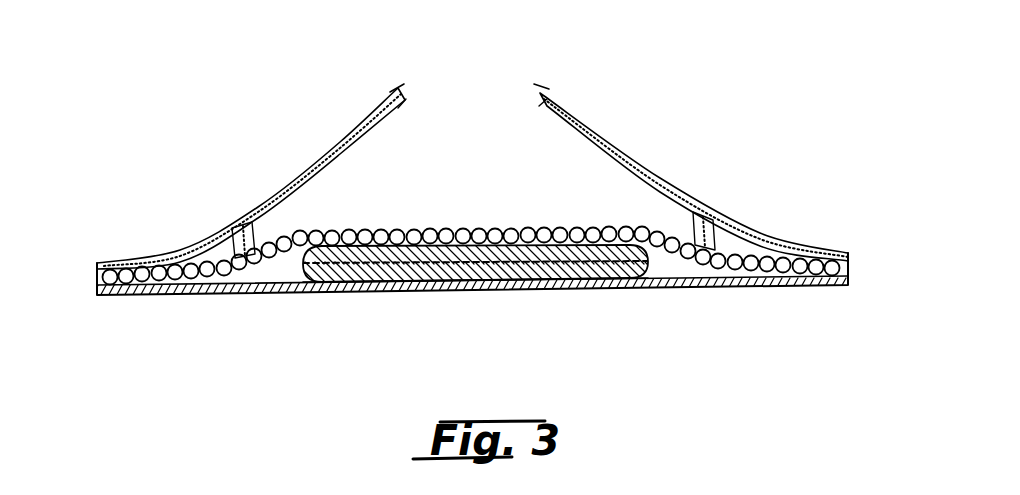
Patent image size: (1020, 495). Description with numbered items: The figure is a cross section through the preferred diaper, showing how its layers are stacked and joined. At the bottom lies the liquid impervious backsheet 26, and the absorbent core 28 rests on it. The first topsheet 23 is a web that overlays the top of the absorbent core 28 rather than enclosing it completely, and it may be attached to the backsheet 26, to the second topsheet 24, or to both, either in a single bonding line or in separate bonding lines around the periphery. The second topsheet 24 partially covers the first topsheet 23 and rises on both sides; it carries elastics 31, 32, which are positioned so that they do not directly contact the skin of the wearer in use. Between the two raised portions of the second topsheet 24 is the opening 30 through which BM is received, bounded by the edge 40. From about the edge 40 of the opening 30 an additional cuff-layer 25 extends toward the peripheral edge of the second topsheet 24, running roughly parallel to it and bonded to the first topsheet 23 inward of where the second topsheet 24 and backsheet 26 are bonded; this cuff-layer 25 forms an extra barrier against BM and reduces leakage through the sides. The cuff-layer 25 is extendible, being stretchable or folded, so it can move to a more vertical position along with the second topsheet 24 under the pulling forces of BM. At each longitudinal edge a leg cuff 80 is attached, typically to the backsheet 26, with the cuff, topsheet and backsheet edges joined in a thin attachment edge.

The first topsheet 23 is at (472, 230).
The second topsheet 24 is at (258, 207).
The cuff-layer 25 is at (396, 113).
The backsheet 26 is at (645, 290).
The absorbent core 28 is at (532, 282).
The opening 30 is at (476, 115).
The elastic 31 is at (573, 107).
The elastic 32 is at (380, 102).
The edge of the opening 40 is at (395, 87).
The leg cuff 80 is at (94, 282).